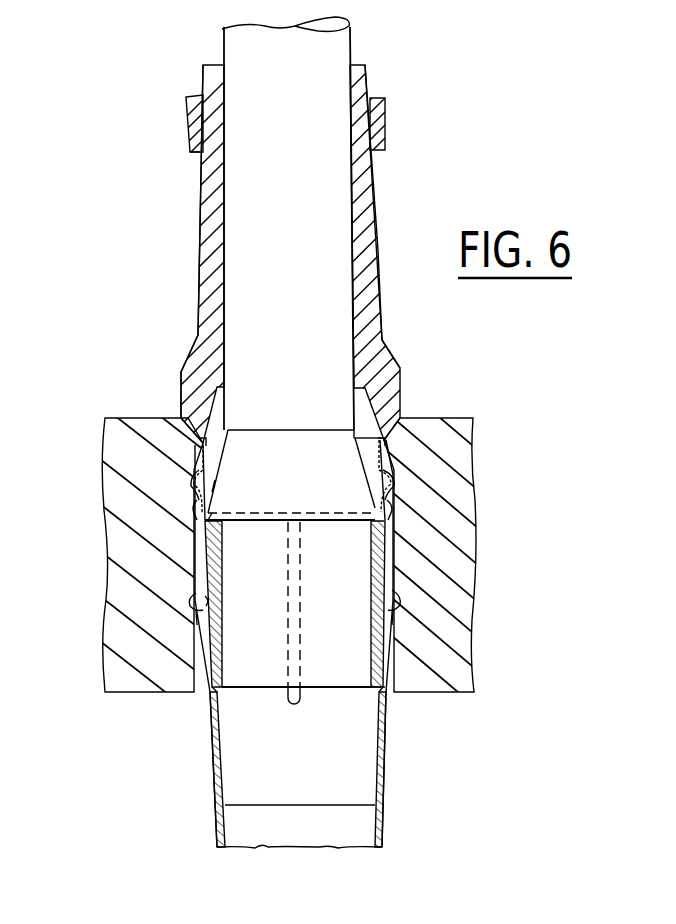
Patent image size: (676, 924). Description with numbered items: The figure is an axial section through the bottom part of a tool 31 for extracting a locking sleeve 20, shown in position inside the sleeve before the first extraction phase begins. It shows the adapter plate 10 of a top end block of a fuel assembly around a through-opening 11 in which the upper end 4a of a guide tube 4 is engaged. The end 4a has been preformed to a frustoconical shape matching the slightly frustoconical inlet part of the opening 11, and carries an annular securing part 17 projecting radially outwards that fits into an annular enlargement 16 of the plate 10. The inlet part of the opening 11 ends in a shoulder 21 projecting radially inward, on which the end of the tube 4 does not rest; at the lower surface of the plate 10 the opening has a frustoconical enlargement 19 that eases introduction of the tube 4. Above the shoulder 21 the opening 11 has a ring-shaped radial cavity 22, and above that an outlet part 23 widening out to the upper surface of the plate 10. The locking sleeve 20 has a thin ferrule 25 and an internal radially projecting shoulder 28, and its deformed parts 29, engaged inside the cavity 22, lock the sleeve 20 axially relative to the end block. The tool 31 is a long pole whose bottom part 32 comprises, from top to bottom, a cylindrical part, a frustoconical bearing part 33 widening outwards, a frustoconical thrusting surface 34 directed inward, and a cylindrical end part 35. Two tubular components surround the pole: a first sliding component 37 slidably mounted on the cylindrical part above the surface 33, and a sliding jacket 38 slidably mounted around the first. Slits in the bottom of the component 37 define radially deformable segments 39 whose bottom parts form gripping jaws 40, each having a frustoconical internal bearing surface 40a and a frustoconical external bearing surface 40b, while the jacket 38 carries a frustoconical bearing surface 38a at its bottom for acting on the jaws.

The guide tube 4 is at (385, 827).
The upper end of the guide tube 4a is at (385, 770).
The adapter plate 10 is at (123, 562).
The through-opening 11 is at (205, 677).
The annular enlargement 16 is at (195, 620).
The annular securing part 17 is at (193, 607).
The frustoconical enlargement 19 is at (383, 690).
The locking sleeve 20 is at (213, 595).
The shoulder 21 is at (193, 505).
The ring-shaped radial cavity 22 is at (195, 483).
The outlet part 23 is at (197, 440).
The ferrule 25 is at (199, 448).
The internal radially projecting shoulder 28 is at (210, 515).
The deformed parts 29 is at (212, 487).
The tool 31 is at (186, 239).
The bottom part of the pole 32 is at (288, 223).
The frustoconical bearing part 33 is at (294, 475).
The frustoconical thrusting surface 34 is at (240, 522).
The cylindrical end part 35 is at (248, 660).
The first sliding component 37 is at (212, 80).
The sliding jacket 38 is at (193, 113).
The frustoconical bearing surface of the sliding jacket 38a is at (200, 152).
The radially deformable segments 39 is at (207, 308).
The gripping jaw 40 is at (183, 373).
The frustoconical internal bearing surface 40a is at (180, 390).
The frustoconical external bearing surface 40b is at (190, 353).